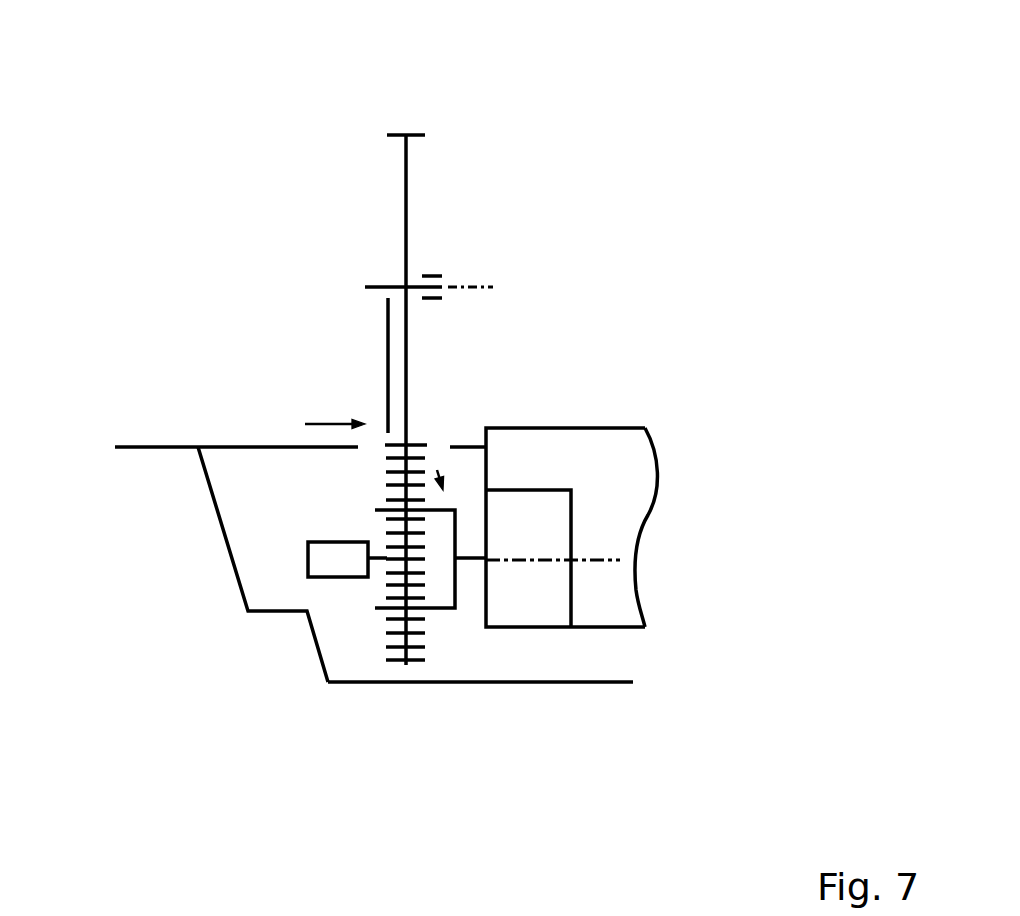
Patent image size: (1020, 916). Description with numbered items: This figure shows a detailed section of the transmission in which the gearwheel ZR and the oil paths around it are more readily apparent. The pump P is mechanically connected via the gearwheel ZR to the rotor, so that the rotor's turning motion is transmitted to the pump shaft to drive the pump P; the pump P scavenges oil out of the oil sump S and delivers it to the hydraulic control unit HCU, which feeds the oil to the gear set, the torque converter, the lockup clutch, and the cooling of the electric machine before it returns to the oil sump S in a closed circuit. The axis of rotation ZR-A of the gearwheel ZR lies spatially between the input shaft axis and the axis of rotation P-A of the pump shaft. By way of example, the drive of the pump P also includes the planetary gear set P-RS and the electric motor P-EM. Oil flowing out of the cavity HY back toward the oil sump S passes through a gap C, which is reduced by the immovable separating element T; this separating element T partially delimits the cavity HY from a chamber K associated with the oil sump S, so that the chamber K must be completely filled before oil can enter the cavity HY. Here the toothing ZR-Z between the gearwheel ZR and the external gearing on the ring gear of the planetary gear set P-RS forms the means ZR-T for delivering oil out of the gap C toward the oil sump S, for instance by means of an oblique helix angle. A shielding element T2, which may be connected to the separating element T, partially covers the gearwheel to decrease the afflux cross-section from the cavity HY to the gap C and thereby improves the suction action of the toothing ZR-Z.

The gearwheel ZR is at (406, 191).
The means for delivering oil ZR-T is at (424, 145).
The axis of rotation of the gearwheel ZR-A is at (485, 287).
The shielding element T2 is at (388, 365).
The cavity HY is at (167, 418).
The separating element T is at (243, 447).
The chamber K is at (288, 513).
The gap C is at (430, 437).
The toothing ZR-Z is at (432, 447).
The hydraulic control unit HCU is at (622, 462).
The pump P is at (548, 526).
The axis of rotation of the pump shaft P-A is at (607, 560).
The electric motor P-EM is at (338, 562).
The planetary gear set P-RS is at (439, 660).
The oil sump S is at (578, 658).